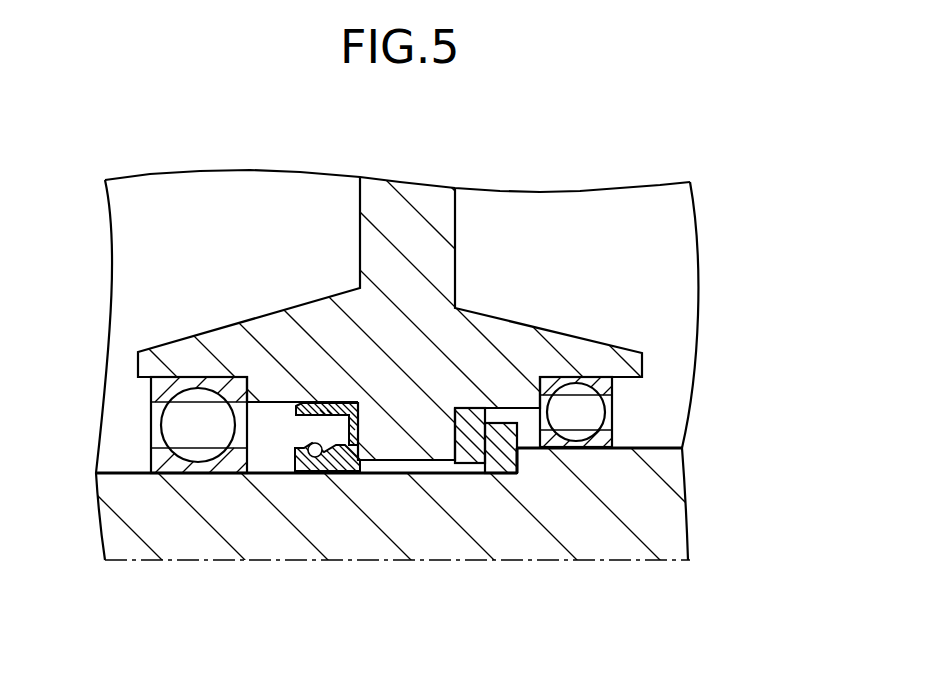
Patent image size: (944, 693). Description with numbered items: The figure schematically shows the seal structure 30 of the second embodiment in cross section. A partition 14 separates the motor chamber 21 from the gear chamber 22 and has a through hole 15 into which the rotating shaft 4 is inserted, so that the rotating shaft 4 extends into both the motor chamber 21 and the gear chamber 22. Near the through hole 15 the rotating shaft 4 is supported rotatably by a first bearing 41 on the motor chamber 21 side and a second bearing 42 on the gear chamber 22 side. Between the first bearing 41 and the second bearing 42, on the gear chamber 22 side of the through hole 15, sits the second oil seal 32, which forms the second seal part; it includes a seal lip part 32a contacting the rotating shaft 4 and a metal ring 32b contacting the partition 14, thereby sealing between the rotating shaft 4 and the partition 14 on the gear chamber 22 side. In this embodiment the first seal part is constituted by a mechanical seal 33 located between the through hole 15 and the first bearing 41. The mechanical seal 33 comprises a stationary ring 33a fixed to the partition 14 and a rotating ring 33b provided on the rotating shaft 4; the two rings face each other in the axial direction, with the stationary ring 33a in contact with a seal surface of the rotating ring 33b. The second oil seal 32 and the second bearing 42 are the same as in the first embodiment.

The rotating shaft 4 is at (648, 513).
The partition 14 is at (425, 242).
The through hole 15 is at (385, 462).
The motor chamber 21 is at (608, 248).
The gear chamber 22 is at (170, 248).
The seal structure 30 is at (564, 141).
The second oil seal 32 is at (283, 443).
The seal lip part 32a is at (303, 456).
The metal ring 32b is at (337, 403).
The mechanical seal 33 is at (408, 608).
The stationary ring 33a is at (467, 442).
The rotating ring 33b is at (503, 462).
The first bearing 41 is at (625, 413).
The second bearing 42 is at (140, 427).